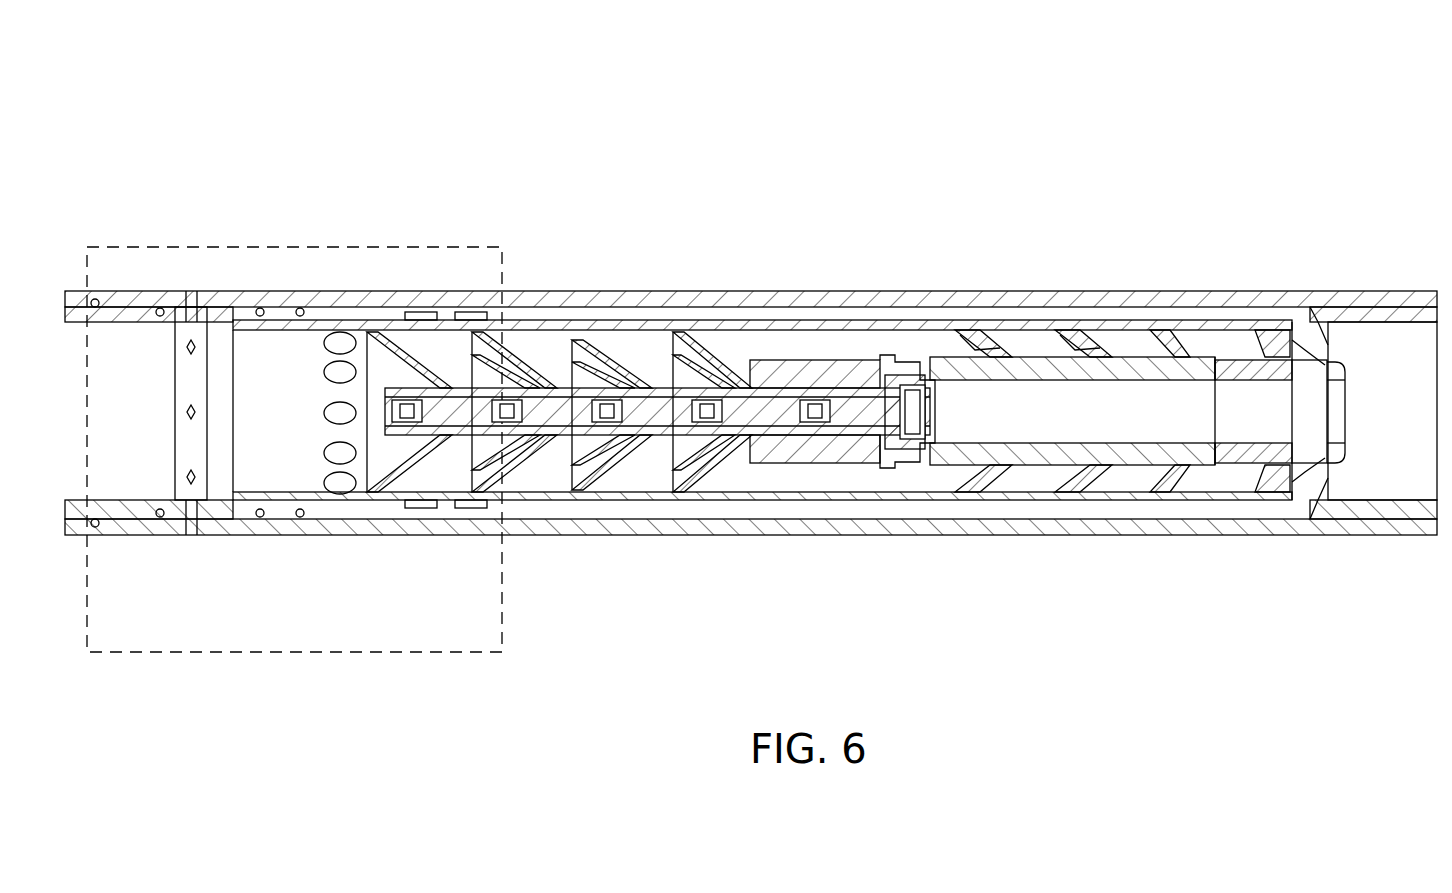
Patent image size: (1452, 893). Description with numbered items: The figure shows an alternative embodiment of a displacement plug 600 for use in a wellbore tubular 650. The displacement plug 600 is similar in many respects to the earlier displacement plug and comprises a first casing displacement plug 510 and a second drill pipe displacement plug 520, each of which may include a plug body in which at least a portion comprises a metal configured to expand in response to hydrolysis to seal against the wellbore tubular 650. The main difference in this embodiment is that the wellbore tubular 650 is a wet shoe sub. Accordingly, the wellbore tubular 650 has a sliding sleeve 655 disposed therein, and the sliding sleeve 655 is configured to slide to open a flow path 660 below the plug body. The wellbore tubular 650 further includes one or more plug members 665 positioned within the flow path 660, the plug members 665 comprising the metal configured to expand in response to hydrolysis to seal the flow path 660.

The displacement plug 600 is at (313, 106).
The casing displacement plug 510 is at (1018, 260).
The drill pipe displacement plug 520 is at (618, 260).
The wellbore tubular 650 is at (1397, 288).
The sliding sleeve 655 is at (803, 500).
The flow path 660 is at (1128, 500).
The plug members 665 is at (476, 500).